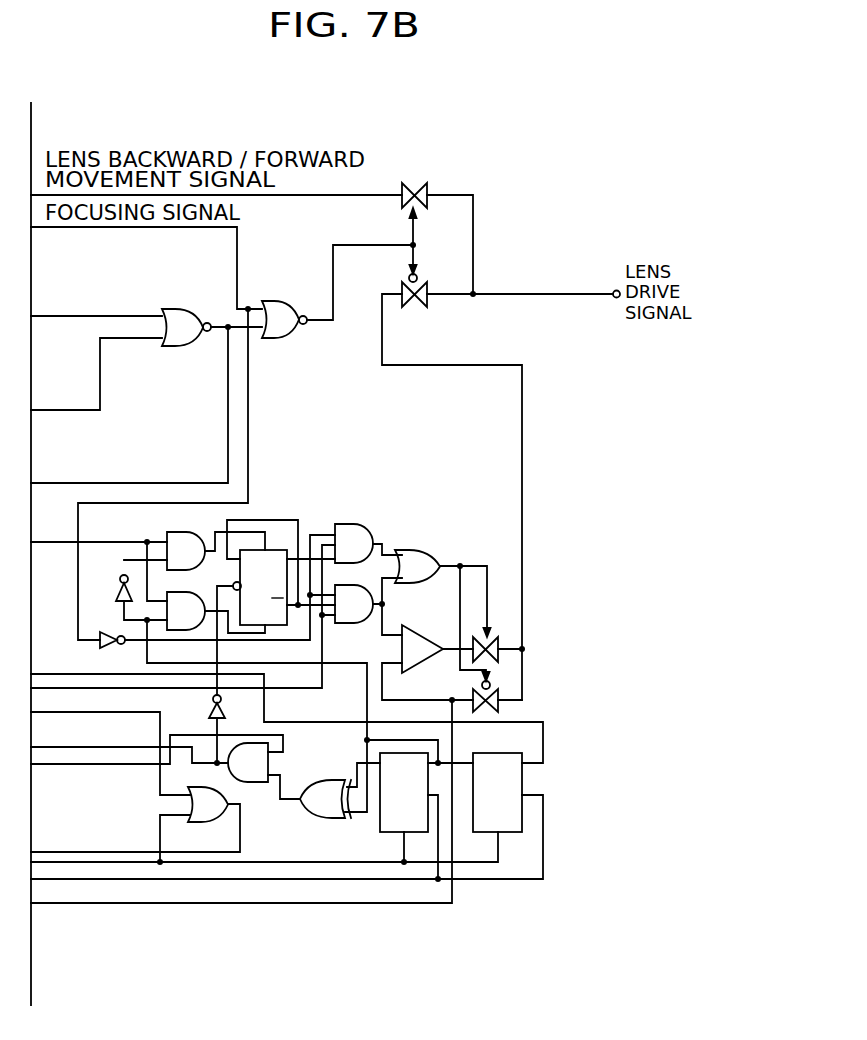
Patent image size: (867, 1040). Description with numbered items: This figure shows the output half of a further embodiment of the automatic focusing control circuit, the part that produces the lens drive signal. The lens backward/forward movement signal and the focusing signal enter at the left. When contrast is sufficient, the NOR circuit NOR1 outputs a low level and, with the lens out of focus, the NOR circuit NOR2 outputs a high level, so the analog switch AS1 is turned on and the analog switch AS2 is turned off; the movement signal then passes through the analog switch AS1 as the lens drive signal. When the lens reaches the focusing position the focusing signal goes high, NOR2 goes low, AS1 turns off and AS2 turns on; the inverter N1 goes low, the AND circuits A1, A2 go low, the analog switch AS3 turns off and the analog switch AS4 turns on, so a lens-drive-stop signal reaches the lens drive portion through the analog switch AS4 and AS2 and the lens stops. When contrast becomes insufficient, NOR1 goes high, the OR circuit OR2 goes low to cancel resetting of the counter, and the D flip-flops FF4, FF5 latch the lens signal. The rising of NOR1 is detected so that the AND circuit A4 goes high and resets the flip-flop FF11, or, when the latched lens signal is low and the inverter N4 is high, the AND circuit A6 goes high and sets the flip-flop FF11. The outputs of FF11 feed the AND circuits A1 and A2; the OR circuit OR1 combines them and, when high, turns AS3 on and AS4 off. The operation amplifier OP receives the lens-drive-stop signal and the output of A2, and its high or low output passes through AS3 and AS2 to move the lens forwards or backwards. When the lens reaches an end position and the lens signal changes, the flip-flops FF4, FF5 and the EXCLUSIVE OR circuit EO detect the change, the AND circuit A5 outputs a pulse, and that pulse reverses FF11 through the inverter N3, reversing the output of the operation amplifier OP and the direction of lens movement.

The NOR circuit NOR1 is at (189, 308).
The NOR circuit NOR2 is at (302, 305).
The analog switch AS1 is at (429, 183).
The analog switch AS2 is at (430, 306).
The flip-flop FF11 is at (273, 549).
The AND circuit A6 is at (170, 532).
The AND circuit A4 is at (210, 601).
The inverter N4 is at (117, 597).
The inverter N1 is at (98, 646).
The AND circuit A1 is at (366, 526).
The AND circuit A2 is at (348, 624).
The OR circuit OR1 is at (438, 543).
The operation amplifier OP is at (428, 634).
The analog switch AS3 is at (498, 640).
The analog switch AS4 is at (500, 706).
The inverter N3 is at (232, 702).
The AND circuit A5 is at (262, 783).
The EXCLUSIVE OR circuit EO is at (318, 781).
The OR circuit OR2 is at (212, 822).
The D flip-flop FF5 is at (380, 823).
The D flip-flop FF4 is at (490, 740).